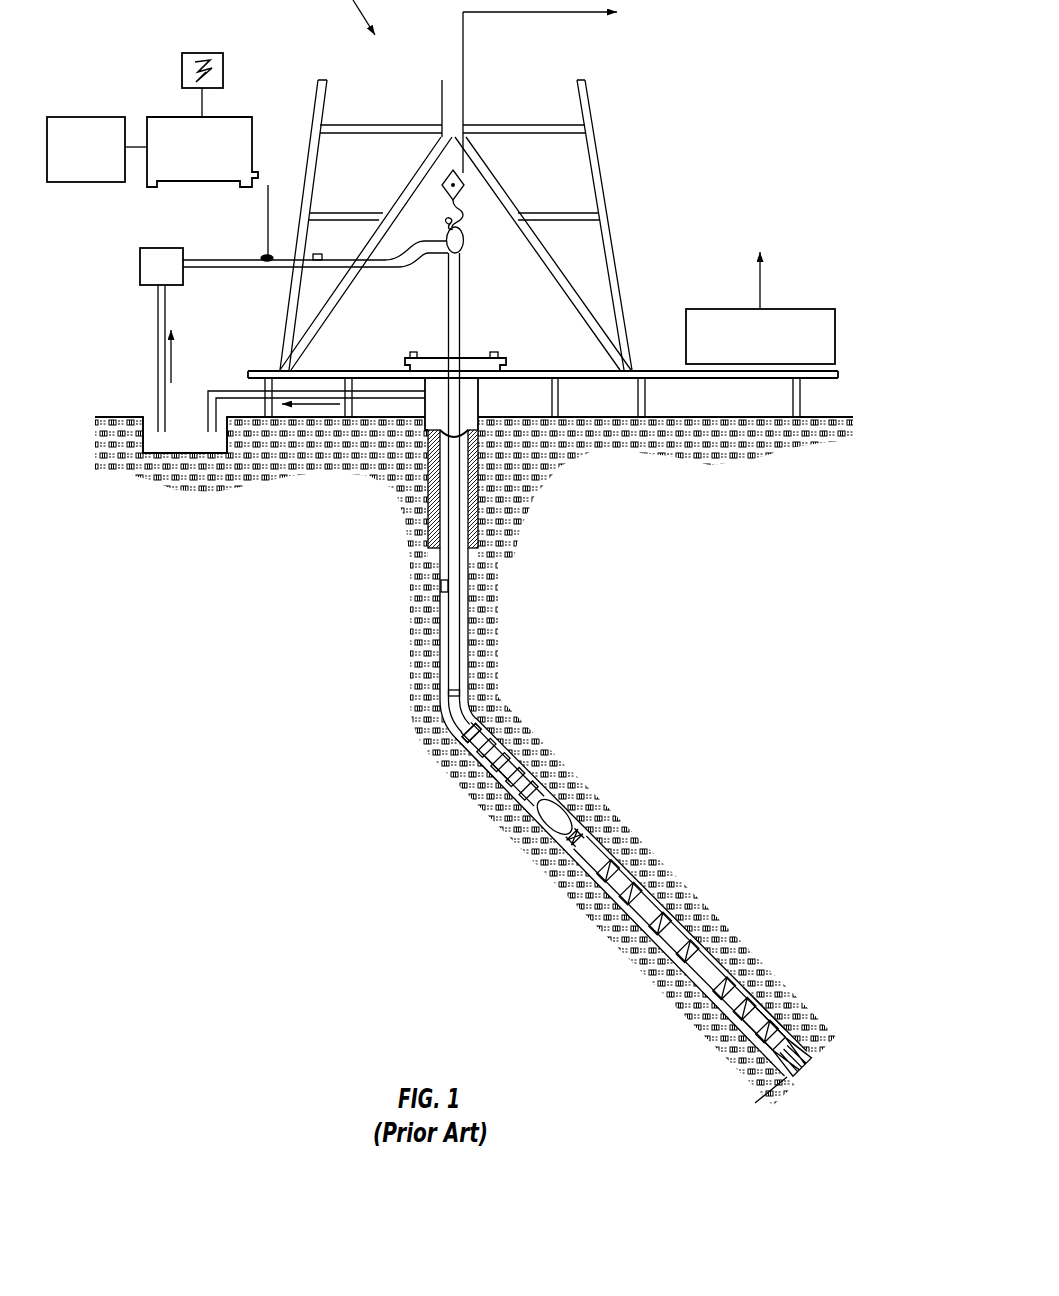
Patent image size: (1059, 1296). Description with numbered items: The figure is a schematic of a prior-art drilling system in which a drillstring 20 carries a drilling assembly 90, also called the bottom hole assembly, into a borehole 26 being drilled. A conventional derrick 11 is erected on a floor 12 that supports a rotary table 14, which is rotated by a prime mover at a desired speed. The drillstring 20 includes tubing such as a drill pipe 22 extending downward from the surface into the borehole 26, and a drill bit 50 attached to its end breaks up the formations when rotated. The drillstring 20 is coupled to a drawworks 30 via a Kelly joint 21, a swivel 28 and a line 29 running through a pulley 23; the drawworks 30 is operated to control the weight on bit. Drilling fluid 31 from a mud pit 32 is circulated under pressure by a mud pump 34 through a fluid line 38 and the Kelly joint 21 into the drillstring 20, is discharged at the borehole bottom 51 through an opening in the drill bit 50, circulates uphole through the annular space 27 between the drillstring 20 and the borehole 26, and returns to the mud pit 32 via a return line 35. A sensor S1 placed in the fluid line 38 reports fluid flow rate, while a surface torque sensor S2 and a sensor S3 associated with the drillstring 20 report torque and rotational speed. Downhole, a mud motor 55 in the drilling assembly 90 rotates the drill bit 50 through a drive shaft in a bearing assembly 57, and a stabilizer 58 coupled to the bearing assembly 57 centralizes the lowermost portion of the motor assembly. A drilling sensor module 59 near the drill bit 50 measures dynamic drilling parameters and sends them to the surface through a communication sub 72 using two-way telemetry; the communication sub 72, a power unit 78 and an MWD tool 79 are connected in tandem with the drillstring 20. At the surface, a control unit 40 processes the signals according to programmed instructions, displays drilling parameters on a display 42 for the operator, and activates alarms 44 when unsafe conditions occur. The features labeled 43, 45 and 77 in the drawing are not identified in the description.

The derrick 11 is at (608, 228).
The floor 12 is at (645, 370).
The rotary table 14 is at (470, 355).
The drillstring 20 is at (470, 634).
The Kelly joint 21 is at (462, 317).
The drill pipe 22 is at (438, 613).
The pulley 23 is at (458, 192).
The borehole 26 is at (472, 720).
The annular space 27 is at (483, 748).
The swivel 28 is at (448, 252).
The line 29 is at (463, 105).
The drawworks 30 is at (812, 308).
The drilling fluid 31 is at (152, 433).
The mud pit 32 is at (208, 452).
The mud pump 34 is at (140, 262).
The return line 35 is at (357, 399).
The fluid line 38 is at (158, 357).
The surface control unit 40 is at (168, 117).
The display/monitor 42 is at (204, 53).
The sensor 43 is at (263, 254).
The alarms 44 is at (110, 183).
The signal line 45 is at (260, 172).
The drill bit 50 is at (807, 1047).
The borehole bottom 51 is at (787, 1087).
The downhole motor 55 is at (653, 903).
The bearing assembly 57 is at (768, 1005).
The stabilizer 58 is at (767, 1022).
The drilling sensor module 59 is at (773, 1033).
The communication sub 72 is at (450, 718).
The downhole tool 77 is at (537, 832).
The power unit 78 is at (468, 757).
The MWD tool 79 is at (485, 778).
The drilling assembly 90 is at (680, 800).
The sensor S1 is at (329, 228).
The surface torque sensor S2 is at (497, 352).
The sensor S3 is at (410, 353).